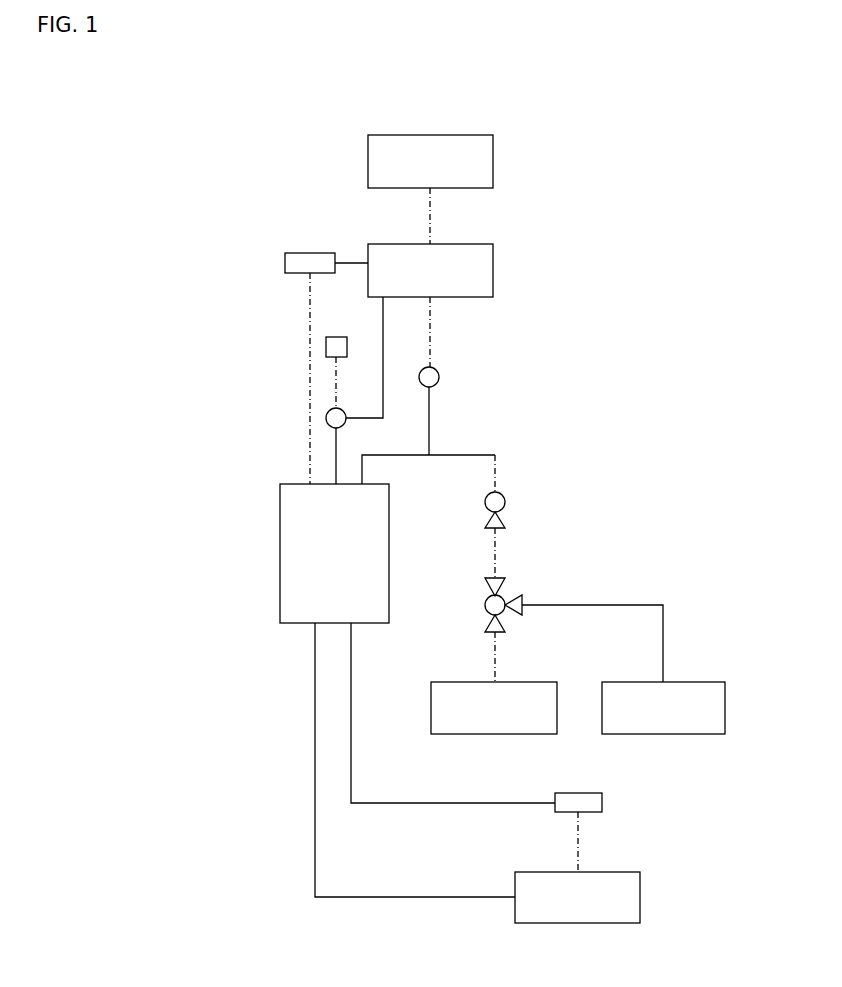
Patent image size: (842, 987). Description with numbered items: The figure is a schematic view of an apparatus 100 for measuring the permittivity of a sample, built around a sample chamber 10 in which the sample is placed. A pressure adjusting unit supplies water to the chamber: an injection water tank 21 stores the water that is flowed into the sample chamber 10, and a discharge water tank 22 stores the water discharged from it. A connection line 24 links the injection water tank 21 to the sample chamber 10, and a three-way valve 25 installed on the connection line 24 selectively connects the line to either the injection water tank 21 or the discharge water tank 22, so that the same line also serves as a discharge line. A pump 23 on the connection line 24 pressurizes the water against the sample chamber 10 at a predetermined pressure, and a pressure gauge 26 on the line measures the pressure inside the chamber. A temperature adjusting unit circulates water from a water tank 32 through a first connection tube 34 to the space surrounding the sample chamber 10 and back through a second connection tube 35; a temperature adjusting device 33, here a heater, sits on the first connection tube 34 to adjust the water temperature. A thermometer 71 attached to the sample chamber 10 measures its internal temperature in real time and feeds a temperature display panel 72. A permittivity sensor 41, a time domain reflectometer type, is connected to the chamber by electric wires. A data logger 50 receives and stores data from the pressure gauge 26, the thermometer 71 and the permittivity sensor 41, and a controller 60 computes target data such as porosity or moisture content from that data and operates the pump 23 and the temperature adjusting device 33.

The apparatus for measuring permittivity of a sample 100 is at (672, 134).
The sample chamber 10 is at (279, 553).
The injection water tank 21 is at (468, 681).
The discharge water tank 22 is at (688, 681).
The pump 23 is at (505, 502).
The connection line 24 is at (497, 552).
The 3-way valve 25 is at (485, 592).
The pressure gauge 26 is at (440, 377).
The water tank 32 is at (640, 897).
The temperature adjusting device 33 is at (610, 802).
The first connection tube 34 is at (452, 802).
The second connection tube 35 is at (415, 898).
The permittivity sensor 41 is at (284, 260).
The data logger 50 is at (493, 270).
The controller 60 is at (493, 160).
The thermometer 71 is at (325, 418).
The temperature display panel 72 is at (325, 346).